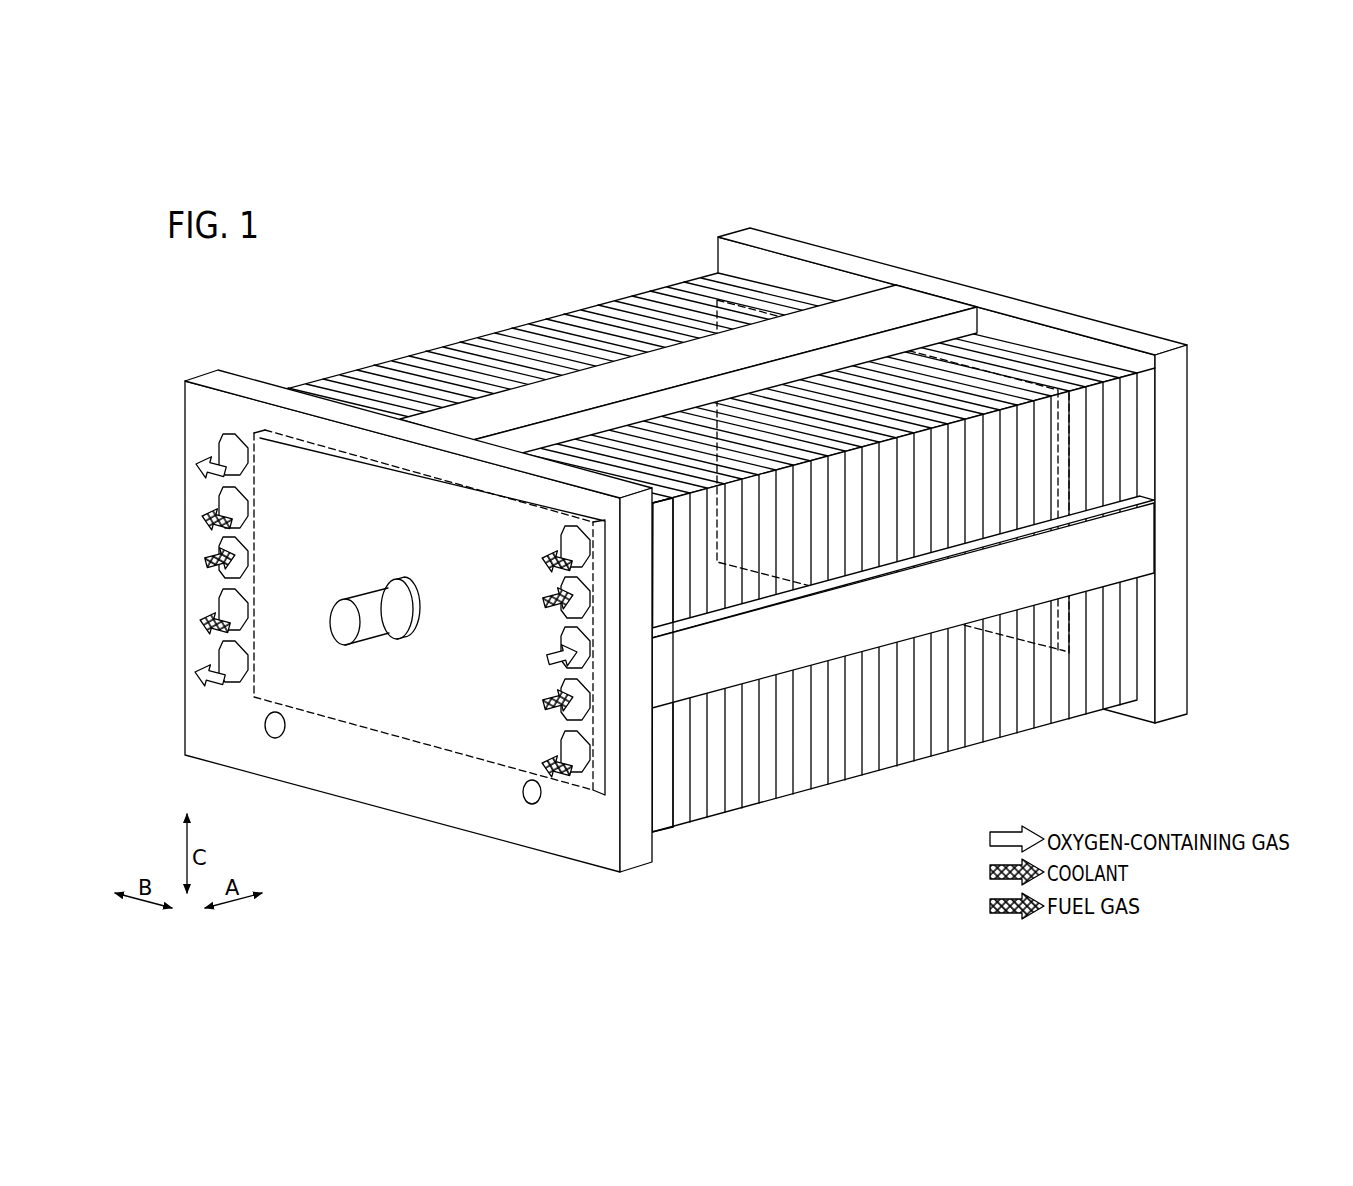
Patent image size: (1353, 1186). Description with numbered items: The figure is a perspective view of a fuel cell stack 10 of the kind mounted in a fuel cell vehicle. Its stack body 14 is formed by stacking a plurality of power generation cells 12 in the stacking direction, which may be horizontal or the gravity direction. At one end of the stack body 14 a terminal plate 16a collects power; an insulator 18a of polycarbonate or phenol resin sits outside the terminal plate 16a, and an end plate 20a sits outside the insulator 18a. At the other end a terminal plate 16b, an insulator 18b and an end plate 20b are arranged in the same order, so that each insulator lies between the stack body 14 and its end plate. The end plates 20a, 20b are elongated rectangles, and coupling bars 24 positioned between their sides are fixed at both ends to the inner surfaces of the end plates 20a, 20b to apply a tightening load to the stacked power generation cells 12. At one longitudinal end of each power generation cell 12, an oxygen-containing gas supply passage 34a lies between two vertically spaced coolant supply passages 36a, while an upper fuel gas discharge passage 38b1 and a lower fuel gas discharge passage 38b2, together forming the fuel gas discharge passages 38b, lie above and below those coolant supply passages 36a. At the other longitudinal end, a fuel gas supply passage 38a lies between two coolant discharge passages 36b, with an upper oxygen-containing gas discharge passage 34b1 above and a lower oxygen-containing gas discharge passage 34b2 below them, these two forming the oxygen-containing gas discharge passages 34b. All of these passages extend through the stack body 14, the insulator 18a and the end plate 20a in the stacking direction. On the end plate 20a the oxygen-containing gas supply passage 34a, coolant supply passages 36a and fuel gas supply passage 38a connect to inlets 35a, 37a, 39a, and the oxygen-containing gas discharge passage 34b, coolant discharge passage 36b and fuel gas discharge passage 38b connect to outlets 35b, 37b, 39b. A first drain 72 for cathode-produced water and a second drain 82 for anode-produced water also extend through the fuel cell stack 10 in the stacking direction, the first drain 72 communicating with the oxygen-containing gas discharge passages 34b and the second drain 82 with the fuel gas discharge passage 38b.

The fuel cell stack 10 is at (301, 271).
The power generation cell 12 is at (507, 332).
The stack body 14 is at (743, 540).
The terminal plate 16a is at (470, 760).
The terminal plate 16b is at (1072, 463).
The insulator 18a is at (665, 808).
The insulator 18b is at (1131, 672).
The end plate 20a is at (395, 795).
The end plate 20b is at (1192, 381).
The coupling bar 24 is at (925, 305).
The oxygen-containing gas supply passage 34a is at (565, 641).
The oxygen-containing gas discharge passage 34b is at (291, 565).
The upper oxygen-containing gas discharge passage 34b1 is at (240, 469).
The lower oxygen-containing gas discharge passage 34b2 is at (240, 676).
The inlet 35a is at (600, 644).
The outlet 35b is at (260, 563).
The coolant supply passage 36a is at (513, 644).
The coolant discharge passage 36b is at (287, 572).
The inlet 37a is at (565, 590).
The outlet 37b is at (240, 516).
The fuel gas supply passage 38a is at (240, 568).
The fuel gas discharge passage 38b is at (508, 650).
The upper fuel gas discharge passage 38b1 is at (567, 540).
The lower fuel gas discharge passage 38b2 is at (508, 749).
The inlet 39a is at (232, 556).
The outlet 39b is at (512, 606).
The first drain 72 is at (273, 738).
The second drain 82 is at (527, 805).